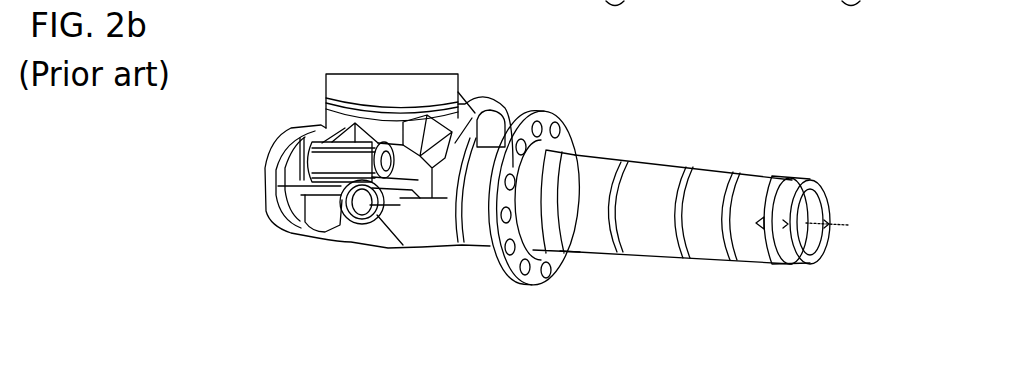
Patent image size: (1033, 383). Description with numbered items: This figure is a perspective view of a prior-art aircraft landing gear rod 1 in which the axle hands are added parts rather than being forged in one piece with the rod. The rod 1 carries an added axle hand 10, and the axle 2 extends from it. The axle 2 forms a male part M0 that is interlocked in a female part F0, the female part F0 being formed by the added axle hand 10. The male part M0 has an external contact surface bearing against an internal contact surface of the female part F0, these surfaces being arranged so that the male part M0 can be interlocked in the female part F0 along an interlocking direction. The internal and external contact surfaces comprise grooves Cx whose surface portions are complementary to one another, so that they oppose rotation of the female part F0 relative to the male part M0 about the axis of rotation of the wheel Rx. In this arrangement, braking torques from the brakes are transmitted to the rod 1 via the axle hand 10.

The rod 1 is at (458, 83).
The axle hand 10 is at (530, 189).
The axle 2 is at (703, 183).
The female part F0 is at (546, 121).
The male part M0 is at (583, 166).
The grooves Cx is at (533, 250).
The axis of rotation of the wheel Rx is at (828, 217).